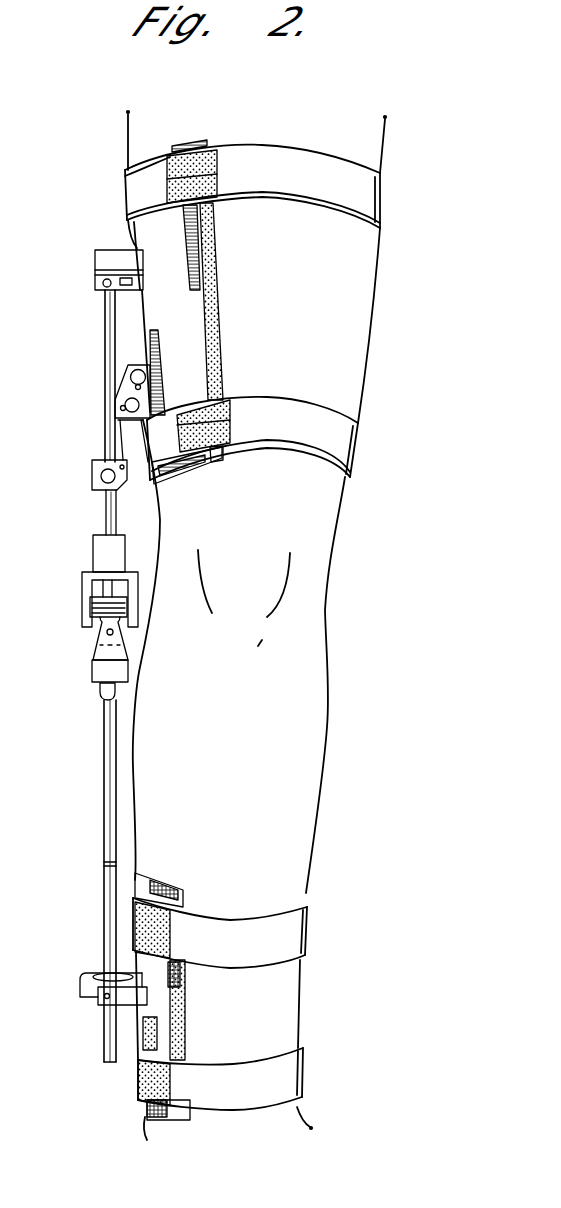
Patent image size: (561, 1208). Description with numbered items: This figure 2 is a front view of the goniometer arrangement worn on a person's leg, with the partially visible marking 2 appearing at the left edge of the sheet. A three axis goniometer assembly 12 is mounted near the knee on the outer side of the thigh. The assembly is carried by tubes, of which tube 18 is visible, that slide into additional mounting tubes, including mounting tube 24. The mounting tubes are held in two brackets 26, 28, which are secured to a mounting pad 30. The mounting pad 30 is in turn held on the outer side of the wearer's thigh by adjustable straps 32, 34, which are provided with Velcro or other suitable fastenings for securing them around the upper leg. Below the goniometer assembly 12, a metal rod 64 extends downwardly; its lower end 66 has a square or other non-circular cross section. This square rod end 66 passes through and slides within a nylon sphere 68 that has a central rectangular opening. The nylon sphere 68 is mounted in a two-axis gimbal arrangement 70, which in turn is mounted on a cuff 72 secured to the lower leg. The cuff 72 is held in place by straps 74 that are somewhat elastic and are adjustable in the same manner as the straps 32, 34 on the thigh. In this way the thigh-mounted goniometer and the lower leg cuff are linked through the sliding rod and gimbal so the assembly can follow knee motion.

The brace 2 is at (5, 530).
The three axis goniometer assembly 12 is at (74, 624).
The tube 18 is at (118, 513).
The mounting tube 24 is at (106, 336).
The bracket 26 is at (112, 244).
The bracket 28 is at (98, 412).
The mounting pad 30 is at (190, 298).
The adjustable strap 32 is at (302, 170).
The adjustable strap 34 is at (315, 425).
The metal rod 64 is at (110, 803).
The lower end 66 is at (107, 898).
The nylon sphere 68 is at (102, 972).
The two-axis gimbal arrangement 70 is at (98, 1002).
The cuff 72 is at (172, 998).
The strap 74 is at (255, 935).